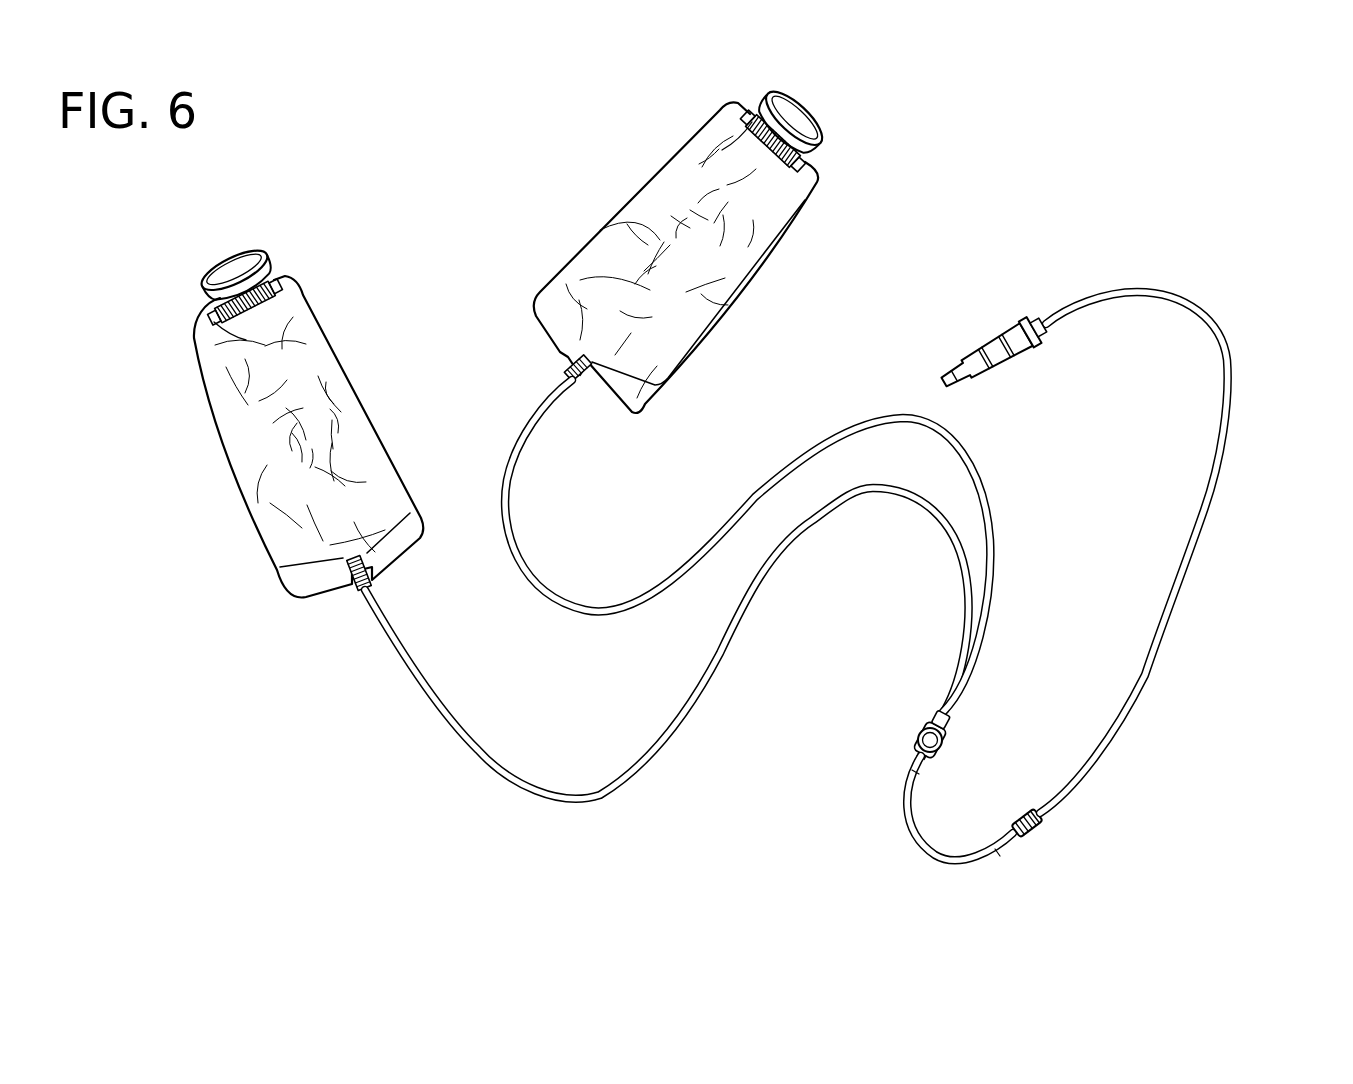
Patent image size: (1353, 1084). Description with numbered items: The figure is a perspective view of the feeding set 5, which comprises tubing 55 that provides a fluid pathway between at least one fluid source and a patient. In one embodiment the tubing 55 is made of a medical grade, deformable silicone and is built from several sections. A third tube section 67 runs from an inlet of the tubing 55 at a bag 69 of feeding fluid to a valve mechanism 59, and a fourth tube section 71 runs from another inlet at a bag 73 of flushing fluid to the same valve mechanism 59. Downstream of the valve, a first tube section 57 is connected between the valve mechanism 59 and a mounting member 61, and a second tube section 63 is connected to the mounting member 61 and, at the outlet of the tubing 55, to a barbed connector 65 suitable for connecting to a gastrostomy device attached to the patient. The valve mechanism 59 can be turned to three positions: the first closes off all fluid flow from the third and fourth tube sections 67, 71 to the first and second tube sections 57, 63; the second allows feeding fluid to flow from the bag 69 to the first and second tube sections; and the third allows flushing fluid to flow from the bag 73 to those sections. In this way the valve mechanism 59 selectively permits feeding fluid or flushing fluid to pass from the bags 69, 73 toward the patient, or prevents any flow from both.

The feeding set 5 is at (1250, 186).
The tubing 55 is at (530, 826).
The first tube section 57 is at (932, 852).
The valve mechanism 59 is at (917, 742).
The mounting member 61 is at (1038, 840).
The second tube section 63 is at (1142, 687).
The barbed connector 65 is at (993, 338).
The third tube section 67 is at (440, 697).
The bag of feeding fluid 69 is at (332, 328).
The fourth tube section 71 is at (752, 508).
The bag of flushing fluid 73 is at (765, 259).